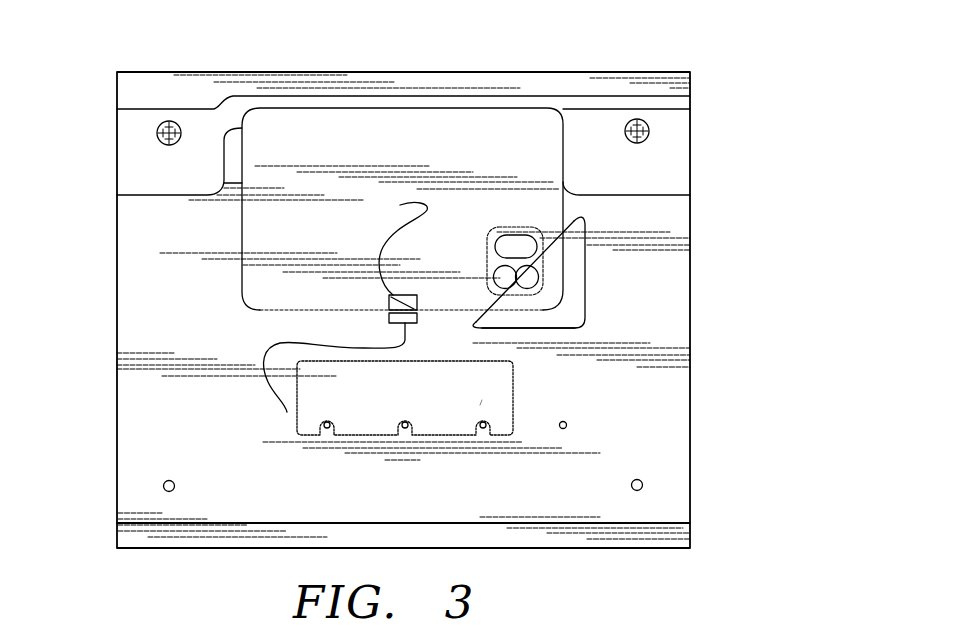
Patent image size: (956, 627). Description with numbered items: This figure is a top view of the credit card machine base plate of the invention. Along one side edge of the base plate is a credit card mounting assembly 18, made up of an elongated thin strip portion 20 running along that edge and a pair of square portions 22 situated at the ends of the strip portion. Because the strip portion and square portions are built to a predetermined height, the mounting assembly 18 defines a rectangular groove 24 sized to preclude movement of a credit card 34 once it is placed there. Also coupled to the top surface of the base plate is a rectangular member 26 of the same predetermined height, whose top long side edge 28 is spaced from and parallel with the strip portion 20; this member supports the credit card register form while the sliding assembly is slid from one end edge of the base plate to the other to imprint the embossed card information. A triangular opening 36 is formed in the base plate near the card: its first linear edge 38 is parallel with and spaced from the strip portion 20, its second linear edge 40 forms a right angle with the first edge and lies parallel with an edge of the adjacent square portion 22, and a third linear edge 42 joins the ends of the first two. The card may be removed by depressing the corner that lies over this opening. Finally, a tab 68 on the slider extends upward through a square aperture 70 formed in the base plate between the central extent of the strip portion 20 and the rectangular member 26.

The credit card mounting assembly 18 is at (700, 64).
The elongated thin strip portion 20 is at (433, 102).
The square portions 22 is at (597, 130).
The rectangular groove 24 is at (218, 218).
The rectangular member 26 is at (480, 403).
The top long side edge 28 is at (448, 363).
The credit card 34 is at (292, 140).
The triangular opening 36 is at (572, 298).
The first linear edge 38 is at (530, 328).
The second linear edge 40 is at (573, 258).
The third linear edge 42 is at (540, 240).
The tab 68 is at (400, 205).
The square aperture 70 is at (287, 410).